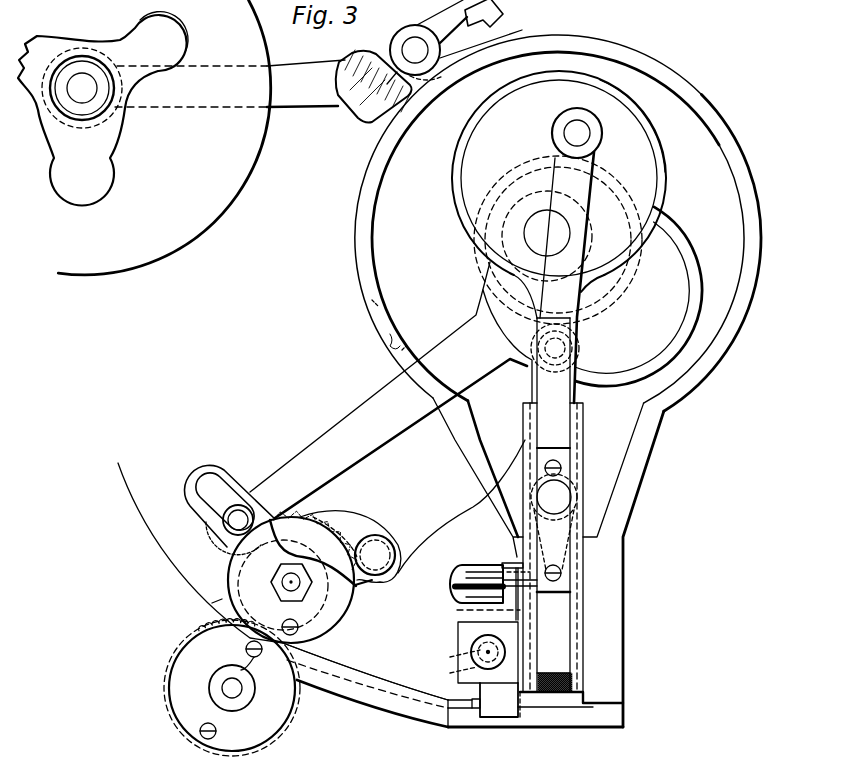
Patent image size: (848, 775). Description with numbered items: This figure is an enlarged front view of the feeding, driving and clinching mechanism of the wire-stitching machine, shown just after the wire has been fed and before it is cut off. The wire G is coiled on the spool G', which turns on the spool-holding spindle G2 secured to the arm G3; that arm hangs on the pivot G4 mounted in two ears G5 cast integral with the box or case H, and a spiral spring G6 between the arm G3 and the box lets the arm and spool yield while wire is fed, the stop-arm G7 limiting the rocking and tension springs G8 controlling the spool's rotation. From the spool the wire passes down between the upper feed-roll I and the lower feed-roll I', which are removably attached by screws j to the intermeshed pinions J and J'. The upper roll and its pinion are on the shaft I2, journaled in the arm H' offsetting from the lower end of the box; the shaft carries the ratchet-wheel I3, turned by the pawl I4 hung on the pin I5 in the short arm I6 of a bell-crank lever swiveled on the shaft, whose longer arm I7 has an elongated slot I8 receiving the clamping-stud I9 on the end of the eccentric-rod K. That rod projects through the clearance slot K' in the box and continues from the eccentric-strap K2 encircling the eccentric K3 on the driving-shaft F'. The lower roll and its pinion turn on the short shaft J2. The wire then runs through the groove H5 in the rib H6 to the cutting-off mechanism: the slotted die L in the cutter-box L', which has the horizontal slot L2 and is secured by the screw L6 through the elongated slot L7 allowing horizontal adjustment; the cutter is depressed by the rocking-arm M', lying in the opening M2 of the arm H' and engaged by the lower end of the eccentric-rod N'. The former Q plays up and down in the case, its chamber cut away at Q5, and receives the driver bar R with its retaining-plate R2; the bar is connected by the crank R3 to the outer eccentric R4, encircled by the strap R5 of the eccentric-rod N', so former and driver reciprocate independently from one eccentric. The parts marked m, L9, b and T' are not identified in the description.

The spool G' is at (164, 137).
The spool-holding spindle G2 is at (102, 110).
The arm G3 is at (230, 83).
The pivot G4 is at (415, 54).
The ears G5 is at (413, 25).
The spiral spring G6 is at (348, 110).
The stop-arm G7 is at (484, 13).
The tension springs G8 is at (164, 32).
The wire G is at (283, 585).
The box or case H is at (544, 381).
The arm H' is at (454, 535).
The groove H5 is at (378, 684).
The rib H6 is at (376, 711).
The body or bar R is at (553, 505).
The retaining-plate R2 is at (554, 533).
The crank R3 is at (571, 255).
The outer eccentric R4 is at (559, 194).
The strap R5 is at (667, 172).
The driving-shaft F' is at (558, 240).
The eccentric-rod K is at (388, 390).
The clearance slot K' is at (381, 337).
The eccentric-strap K2 is at (683, 262).
The eccentric K3 is at (632, 297).
The eccentric-rod N' is at (573, 345).
The upper feed-roll I is at (291, 580).
The lower feed-roll I' is at (232, 688).
The shaft I2 is at (277, 577).
The ratchet-wheel I3 is at (320, 517).
The pawl I4 is at (353, 537).
The pin I5 is at (381, 550).
The short arm I6 is at (368, 582).
The longer arm I7 is at (192, 487).
The elongated slot I8 is at (220, 478).
The clamping-stud I9 is at (207, 530).
The pinion J is at (203, 601).
The pinion J' is at (210, 621).
The short shaft J2 is at (255, 688).
The screws j is at (246, 649).
The rocking-arm M' is at (477, 591).
The opening M2 is at (507, 560).
The rod m is at (478, 610).
The die L is at (464, 725).
The cutter-box L' is at (473, 652).
The horizontal slot L2 is at (495, 645).
The screw L6 is at (452, 678).
The horizontally elongated slot L7 is at (454, 661).
The bracket foot L9 is at (514, 678).
The former Q is at (583, 599).
The cut-away Q5 is at (553, 678).
The pin b is at (518, 718).
The base plate T' is at (535, 733).